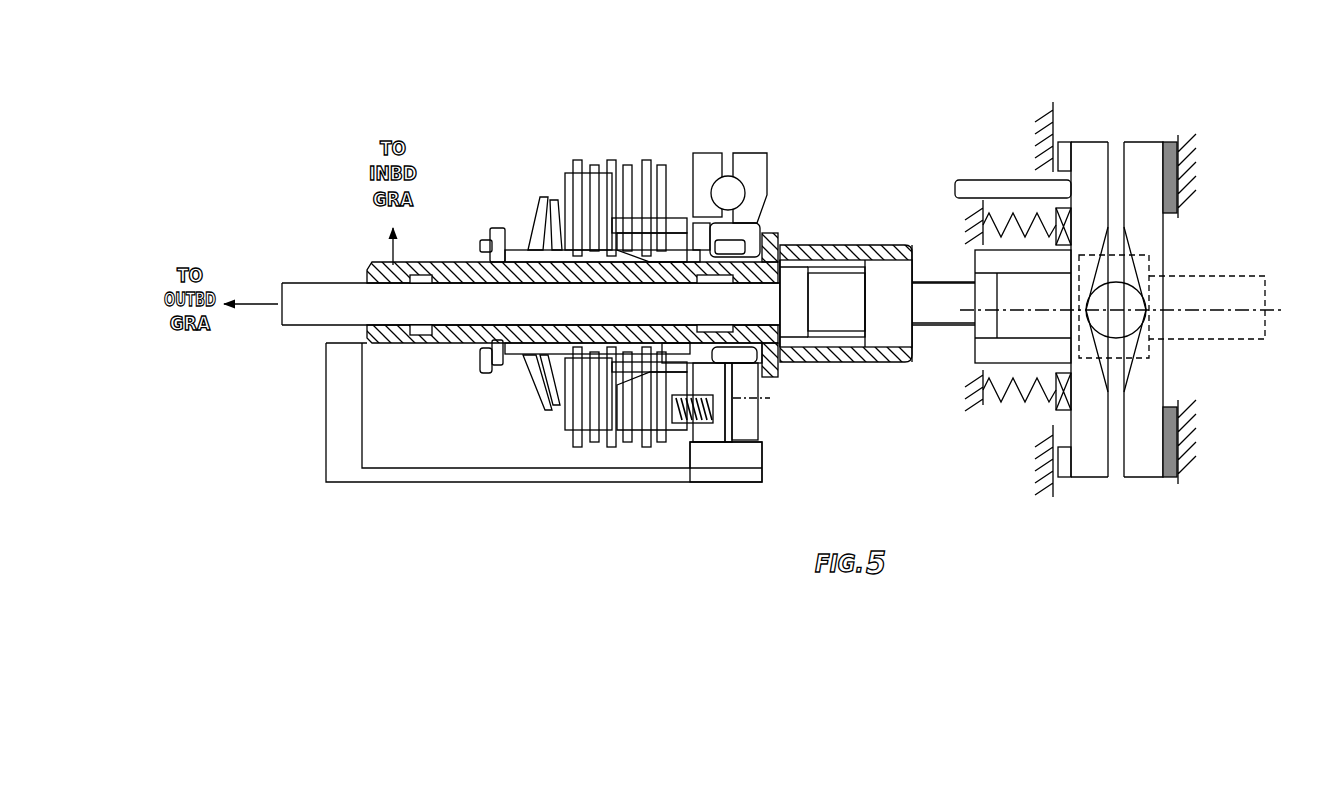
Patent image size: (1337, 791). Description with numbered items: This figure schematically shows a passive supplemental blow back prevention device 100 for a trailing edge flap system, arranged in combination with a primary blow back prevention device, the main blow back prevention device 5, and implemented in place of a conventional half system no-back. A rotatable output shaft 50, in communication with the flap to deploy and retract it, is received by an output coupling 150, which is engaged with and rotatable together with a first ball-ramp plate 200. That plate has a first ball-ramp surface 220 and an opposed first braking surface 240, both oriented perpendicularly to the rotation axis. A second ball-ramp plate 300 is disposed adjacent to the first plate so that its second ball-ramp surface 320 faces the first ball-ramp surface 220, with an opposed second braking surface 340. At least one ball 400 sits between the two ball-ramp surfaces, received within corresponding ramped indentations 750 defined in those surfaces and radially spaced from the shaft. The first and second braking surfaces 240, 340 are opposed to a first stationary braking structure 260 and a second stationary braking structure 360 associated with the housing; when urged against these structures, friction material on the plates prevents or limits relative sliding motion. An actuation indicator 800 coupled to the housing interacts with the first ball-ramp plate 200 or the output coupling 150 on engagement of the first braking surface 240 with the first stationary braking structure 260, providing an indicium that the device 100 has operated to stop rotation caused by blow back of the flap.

The main blow back prevention device 5 is at (728, 446).
The rotatable output shaft 50 is at (935, 290).
The blow back prevention device 100 is at (920, 176).
The output coupling 150 is at (985, 353).
The first ball-ramp plate 200 is at (1085, 142).
The first ball-ramp surface 220 is at (1110, 463).
The first braking surface 240 is at (1053, 156).
The first stationary braking structure 260 is at (1053, 483).
The second ball-ramp plate 300 is at (1140, 142).
The second ball-ramp surface 320 is at (1122, 158).
The second braking surface 340 is at (1172, 440).
The second stationary braking structure 360 is at (1172, 163).
The ball 400 is at (1128, 310).
The ramped indentations 750 is at (1110, 243).
The actuation indicator 800 is at (1000, 182).